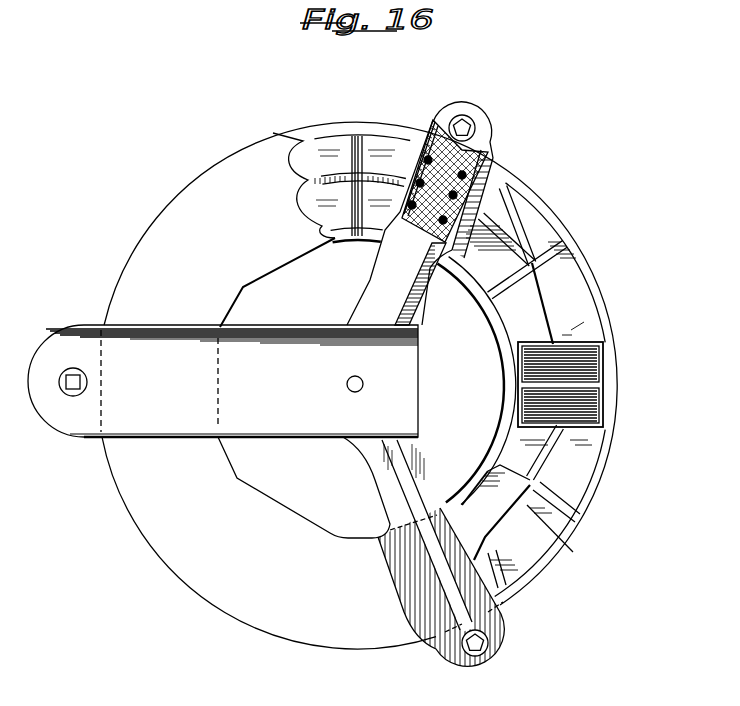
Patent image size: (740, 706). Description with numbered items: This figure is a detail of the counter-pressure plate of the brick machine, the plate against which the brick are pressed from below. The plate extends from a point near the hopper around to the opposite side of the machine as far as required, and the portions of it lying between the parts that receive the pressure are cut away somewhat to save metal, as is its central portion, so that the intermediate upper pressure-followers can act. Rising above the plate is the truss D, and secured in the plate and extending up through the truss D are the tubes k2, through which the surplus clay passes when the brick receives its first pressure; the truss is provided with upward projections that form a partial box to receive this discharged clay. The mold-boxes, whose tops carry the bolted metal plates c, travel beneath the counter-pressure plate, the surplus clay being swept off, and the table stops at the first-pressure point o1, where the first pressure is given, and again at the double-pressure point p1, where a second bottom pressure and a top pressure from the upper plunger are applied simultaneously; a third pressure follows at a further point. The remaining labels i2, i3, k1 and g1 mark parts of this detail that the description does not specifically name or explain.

The metal plates c is at (223, 381).
The truss D is at (399, 222).
The first-pressure point o1 is at (450, 188).
The bar i2 is at (455, 196).
The bar i3 is at (414, 169).
The spoke k1 is at (574, 324).
The tubes k2 is at (465, 173).
The link g1 is at (441, 555).
The double-pressure point p1 is at (604, 382).